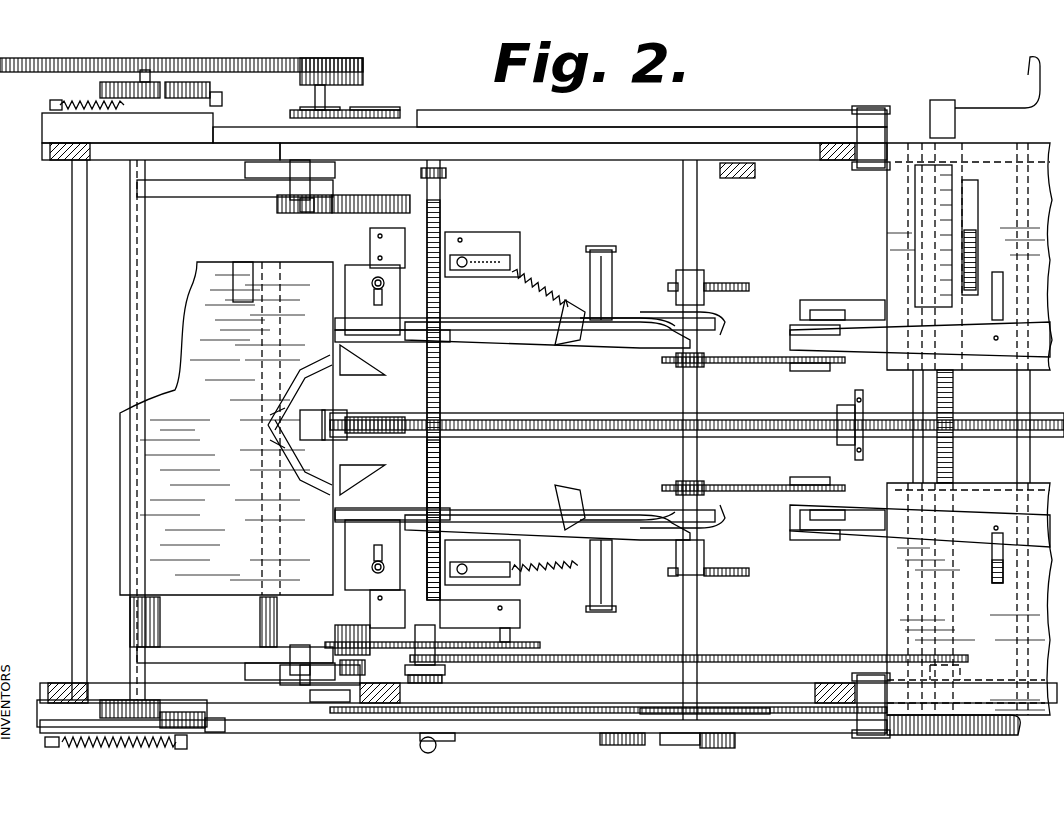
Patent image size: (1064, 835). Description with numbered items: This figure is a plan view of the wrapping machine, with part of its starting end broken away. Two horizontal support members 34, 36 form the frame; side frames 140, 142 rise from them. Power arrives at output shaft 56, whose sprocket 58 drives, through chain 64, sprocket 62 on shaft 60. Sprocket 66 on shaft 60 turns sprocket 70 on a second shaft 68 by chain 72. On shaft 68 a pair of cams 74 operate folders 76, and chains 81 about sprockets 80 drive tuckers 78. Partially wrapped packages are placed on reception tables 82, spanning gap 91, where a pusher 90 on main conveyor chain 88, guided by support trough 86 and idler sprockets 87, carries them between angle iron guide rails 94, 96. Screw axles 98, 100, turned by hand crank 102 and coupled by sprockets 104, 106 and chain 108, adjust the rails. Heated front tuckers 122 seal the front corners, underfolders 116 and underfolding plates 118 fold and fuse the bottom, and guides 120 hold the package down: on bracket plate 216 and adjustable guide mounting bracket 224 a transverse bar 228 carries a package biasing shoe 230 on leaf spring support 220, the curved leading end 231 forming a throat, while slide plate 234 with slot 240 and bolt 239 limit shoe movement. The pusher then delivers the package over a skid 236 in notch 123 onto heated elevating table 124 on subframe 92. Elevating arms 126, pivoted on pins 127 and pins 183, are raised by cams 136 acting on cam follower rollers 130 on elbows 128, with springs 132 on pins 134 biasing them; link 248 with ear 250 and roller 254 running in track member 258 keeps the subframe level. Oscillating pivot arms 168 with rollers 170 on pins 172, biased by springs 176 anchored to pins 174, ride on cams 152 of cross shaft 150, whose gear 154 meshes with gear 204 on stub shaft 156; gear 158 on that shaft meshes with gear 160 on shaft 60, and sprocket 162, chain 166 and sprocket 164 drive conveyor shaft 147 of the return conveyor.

The horizontal support member 34 is at (535, 692).
The horizontal support member 36 is at (612, 158).
The output shaft 56 is at (510, 633).
The sprocket 58 is at (540, 644).
The shaft 60 is at (370, 636).
The sprocket 62 is at (365, 658).
The chain 64 is at (470, 642).
The sprocket 66 is at (352, 735).
The second shaft 68 is at (700, 638).
The sprocket 70 is at (765, 716).
The chain 72 is at (568, 715).
The cams 74 is at (740, 283).
The folders 76 is at (612, 282).
The tuckers 78 is at (838, 300).
The sprockets 80 is at (700, 364).
The chains 81 is at (780, 363).
The reception tables 82 is at (985, 200).
The support trough 86 is at (605, 412).
The idler sprockets 87 is at (350, 432).
The main conveyor chain 88 is at (398, 416).
The pusher 90 is at (863, 406).
The gap 91 is at (1040, 393).
The subframe 92 is at (265, 250).
The guide rail 94 is at (865, 518).
The guide rail 96 is at (945, 350).
The screw axle 98 is at (953, 457).
The screw axle 100 is at (440, 460).
The hand crank 102 is at (1003, 107).
The sprocket 104 is at (962, 659).
The sprocket 106 is at (445, 665).
The chain 108 is at (630, 655).
The underfolders 116 is at (403, 332).
The underfolding plates 118 is at (352, 365).
The guides 120 is at (525, 270).
The front tuckers 122 is at (565, 345).
The notch 123 is at (290, 400).
The heated elevating table 124 is at (220, 262).
The elevating arm 126 is at (630, 124).
The pins 127 is at (871, 106).
The cam follower elbow 128 is at (675, 746).
The cam follower roller 130 is at (700, 748).
The springs 132 is at (433, 754).
The pins 134 is at (455, 740).
The cams 136 is at (632, 746).
The side frame 140 is at (58, 685).
The side frame 142 is at (60, 152).
The conveyor shaft 147 is at (440, 168).
The cross shaft 150 is at (150, 72).
The cams 152 is at (108, 84).
The gear 154 is at (145, 70).
The stub shaft 156 is at (315, 98).
The gear 158 is at (292, 213).
The gear 160 is at (398, 202).
The sprocket 162 is at (352, 110).
The sprocket 164 is at (400, 110).
The chain 166 is at (365, 110).
The oscillating pivot arms 168 is at (216, 106).
The cam follower rollers 170 is at (210, 90).
The pins 172 is at (181, 750).
The pins 174 is at (48, 104).
The springs 176 is at (65, 100).
The pins 183 is at (215, 172).
The gear 204 is at (363, 70).
The bracket plate 216 is at (378, 250).
The leaf spring support 220 is at (512, 348).
The adjustable guide mounting bracket 224 is at (445, 250).
The transverse bar 228 is at (462, 270).
The package biasing shoe 230 is at (600, 340).
The leading end 231 is at (628, 315).
The slide plate 234 is at (340, 322).
The skid 236 is at (290, 440).
The bolt 239 is at (370, 283).
The slot 240 is at (375, 296).
The link 248 is at (300, 700).
The ear 250 is at (330, 702).
The roller 254 is at (310, 168).
The track member 258 is at (262, 178).